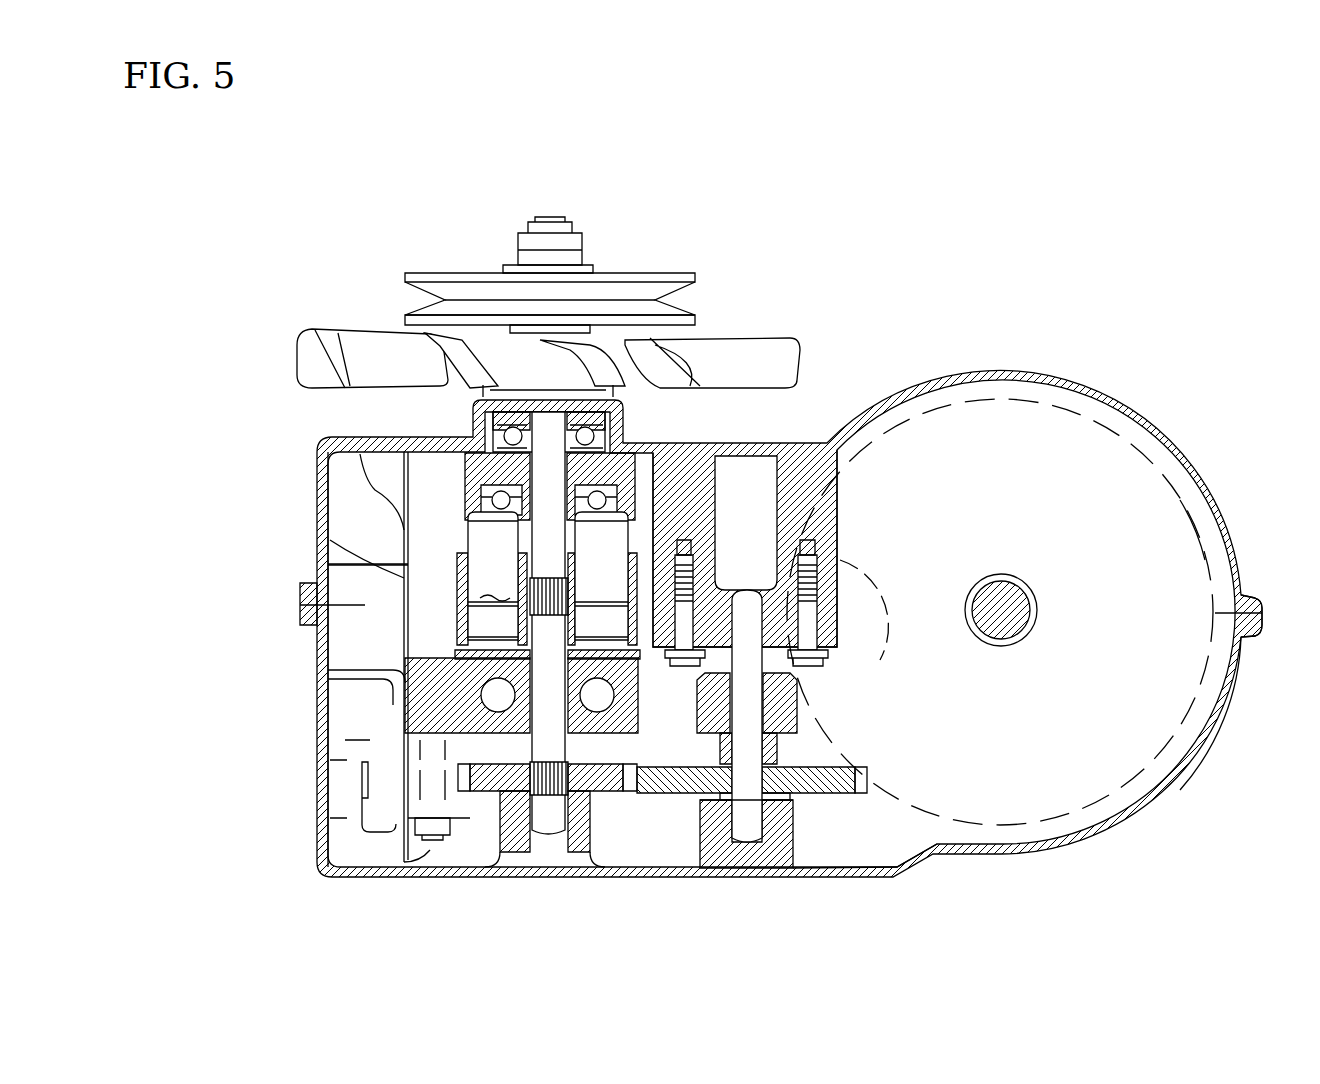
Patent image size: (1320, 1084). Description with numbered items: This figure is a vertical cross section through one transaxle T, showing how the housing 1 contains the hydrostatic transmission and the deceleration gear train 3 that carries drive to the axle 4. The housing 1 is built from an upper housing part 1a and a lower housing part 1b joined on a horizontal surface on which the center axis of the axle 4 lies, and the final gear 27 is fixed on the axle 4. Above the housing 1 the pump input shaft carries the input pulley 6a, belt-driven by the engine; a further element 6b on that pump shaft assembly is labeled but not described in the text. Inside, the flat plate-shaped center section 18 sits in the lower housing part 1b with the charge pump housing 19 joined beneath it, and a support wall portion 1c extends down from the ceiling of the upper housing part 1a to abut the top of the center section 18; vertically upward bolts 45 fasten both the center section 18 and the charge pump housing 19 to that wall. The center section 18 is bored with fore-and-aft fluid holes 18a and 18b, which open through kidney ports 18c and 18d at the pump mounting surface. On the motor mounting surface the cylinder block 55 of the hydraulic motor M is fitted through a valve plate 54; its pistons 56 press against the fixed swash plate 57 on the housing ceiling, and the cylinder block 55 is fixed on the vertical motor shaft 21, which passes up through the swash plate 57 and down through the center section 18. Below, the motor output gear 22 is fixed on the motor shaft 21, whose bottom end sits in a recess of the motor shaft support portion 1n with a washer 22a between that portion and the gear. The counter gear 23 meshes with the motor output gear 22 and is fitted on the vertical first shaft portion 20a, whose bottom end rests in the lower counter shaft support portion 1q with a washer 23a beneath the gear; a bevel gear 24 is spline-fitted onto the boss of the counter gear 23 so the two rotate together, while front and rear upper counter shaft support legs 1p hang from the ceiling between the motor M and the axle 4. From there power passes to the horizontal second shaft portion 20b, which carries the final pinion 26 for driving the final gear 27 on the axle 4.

The housing 1 is at (284, 456).
The upper housing part 1a is at (1243, 582).
The lower housing part 1b is at (1240, 668).
The support wall portion 1c is at (400, 542).
The motor shaft support portion 1n is at (610, 850).
The upper counter shaft support legs 1p is at (790, 505).
The lower counter shaft support portion 1q is at (800, 840).
The deceleration gear train 3 is at (830, 740).
The axle 4 is at (1005, 640).
The input pulley 6a is at (655, 278).
The fan / bolts 6b is at (820, 628).
The center section 18 is at (410, 664).
The fluid hole 18a is at (340, 712).
The fluid hole 18b is at (600, 697).
The kidney port 18c is at (450, 650).
The kidney port 18d is at (500, 695).
The charge pump housing 19 is at (412, 796).
The first shaft portion 20a is at (747, 842).
The second shaft portion 20b is at (900, 630).
The motor shaft 21 is at (548, 825).
The motor output gear 22 is at (465, 775).
The washer 22a is at (500, 830).
The counter gear 23 is at (860, 782).
The washer 23a is at (790, 796).
The bevel gear 24 is at (802, 700).
The final pinion 26 is at (920, 522).
The final gear 27 is at (1192, 510).
The vertically upward bolts 45 is at (405, 865).
The valve plate 54 is at (300, 585).
The cylinder block 55 is at (330, 566).
The pistons 56 is at (547, 578).
The fixed swash plate 57 is at (655, 475).
The hydraulic motor M is at (441, 522).
The transaxle T is at (1180, 325).